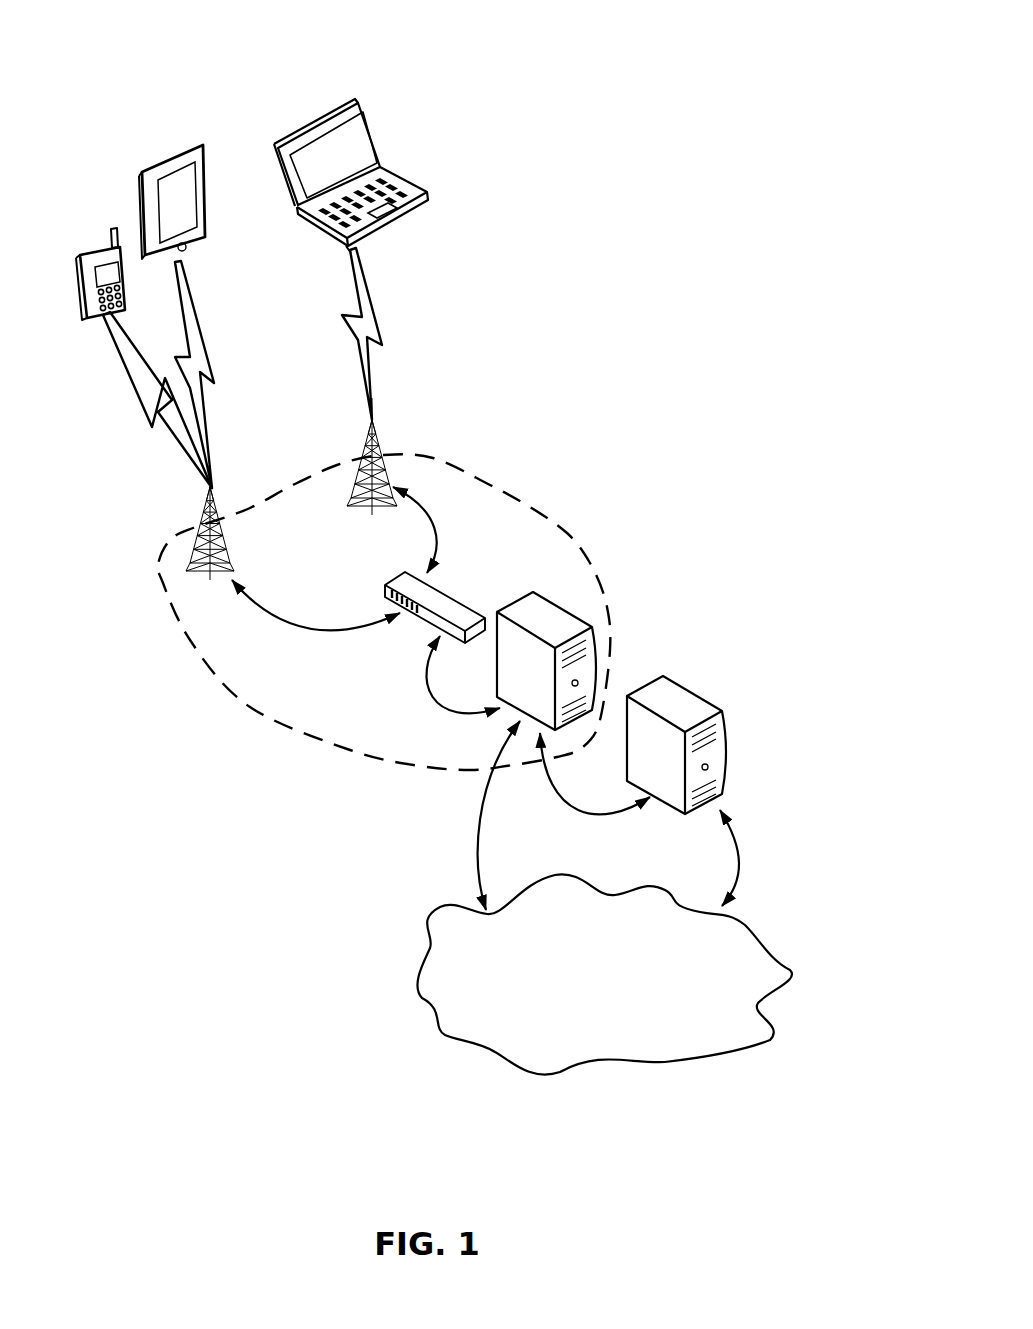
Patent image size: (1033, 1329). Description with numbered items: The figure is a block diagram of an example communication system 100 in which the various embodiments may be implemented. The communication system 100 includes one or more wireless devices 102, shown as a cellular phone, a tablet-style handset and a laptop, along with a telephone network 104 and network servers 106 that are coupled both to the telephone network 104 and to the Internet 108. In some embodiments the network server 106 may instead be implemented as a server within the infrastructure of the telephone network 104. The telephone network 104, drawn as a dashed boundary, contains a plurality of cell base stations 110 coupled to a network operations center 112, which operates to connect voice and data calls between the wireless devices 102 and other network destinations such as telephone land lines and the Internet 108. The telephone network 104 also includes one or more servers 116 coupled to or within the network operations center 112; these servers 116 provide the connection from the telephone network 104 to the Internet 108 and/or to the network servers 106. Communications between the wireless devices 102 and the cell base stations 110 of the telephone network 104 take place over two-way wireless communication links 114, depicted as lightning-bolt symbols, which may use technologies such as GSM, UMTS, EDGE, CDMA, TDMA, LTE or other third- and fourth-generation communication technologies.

The communication system 100 is at (762, 61).
The wireless devices 102 is at (364, 101).
The telephone network 104 is at (529, 503).
The network servers 106 is at (701, 701).
The Internet 108 is at (611, 894).
The cell base stations 110 is at (215, 520).
The network operations center 112 is at (392, 591).
The two-way wireless communication links 114 is at (128, 357).
The servers 116 is at (563, 610).